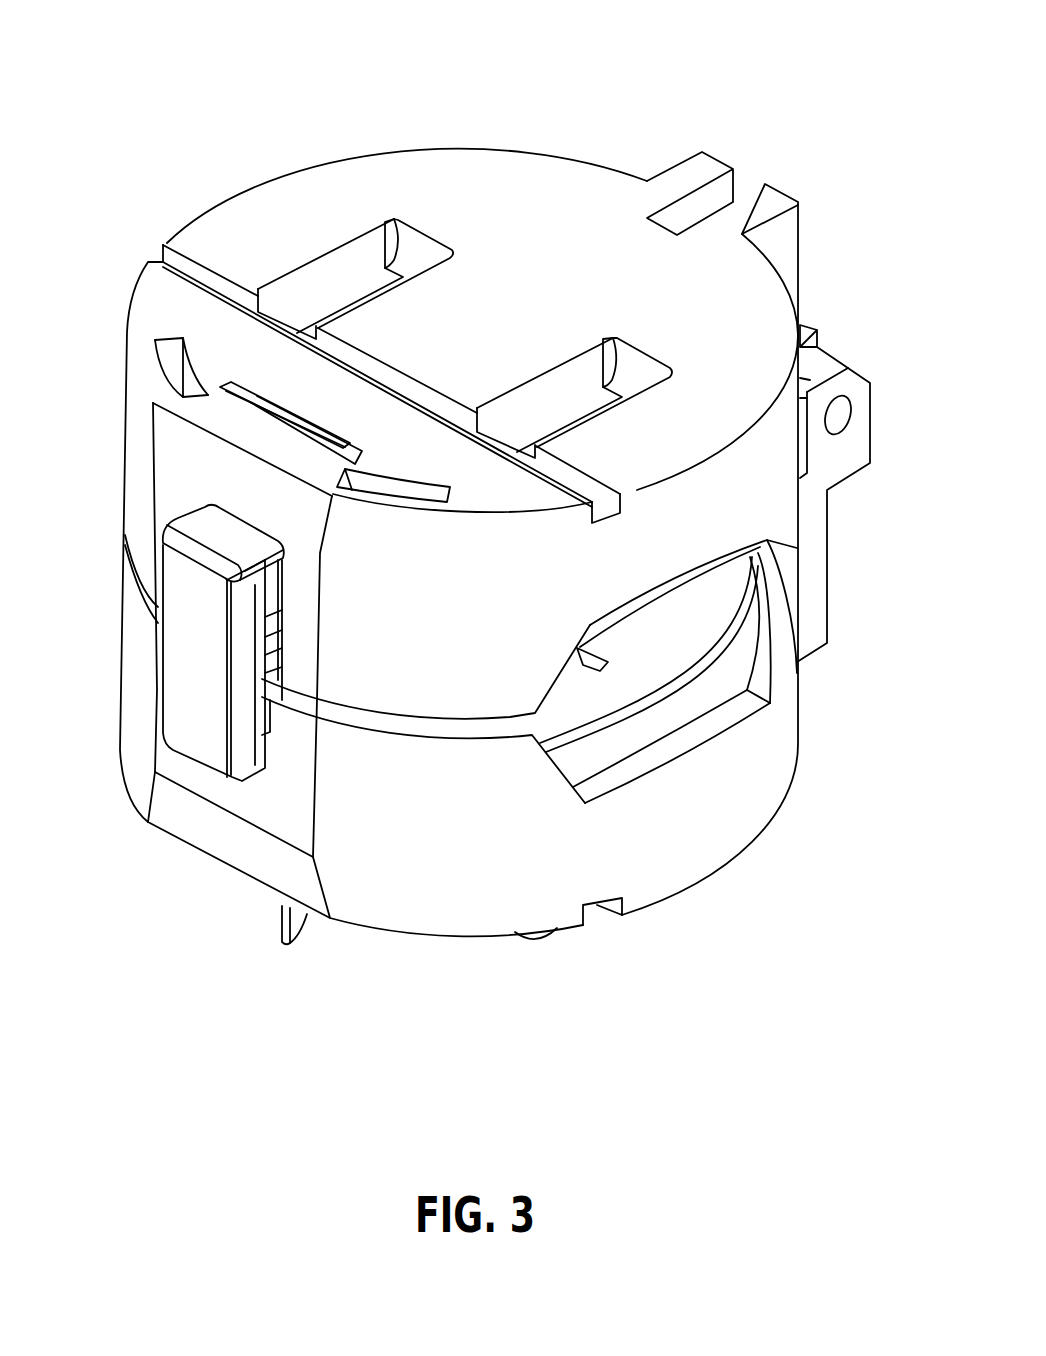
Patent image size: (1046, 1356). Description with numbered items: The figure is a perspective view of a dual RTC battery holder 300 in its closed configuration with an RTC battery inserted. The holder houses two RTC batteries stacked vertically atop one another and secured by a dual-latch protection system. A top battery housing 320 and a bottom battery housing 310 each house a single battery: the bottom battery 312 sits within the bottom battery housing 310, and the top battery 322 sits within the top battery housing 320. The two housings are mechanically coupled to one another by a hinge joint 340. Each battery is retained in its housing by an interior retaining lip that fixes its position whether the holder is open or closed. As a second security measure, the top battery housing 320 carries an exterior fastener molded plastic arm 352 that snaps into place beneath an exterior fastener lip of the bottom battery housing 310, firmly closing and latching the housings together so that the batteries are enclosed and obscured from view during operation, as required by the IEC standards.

The dual RTC battery holder 300 is at (118, 103).
The bottom battery housing 310 is at (673, 873).
The bottom battery 312 is at (700, 718).
The top battery housing 320 is at (353, 178).
The top battery 322 is at (652, 614).
The hinge joint 340 is at (840, 412).
The exterior fastener molded plastic arm 352 is at (187, 687).